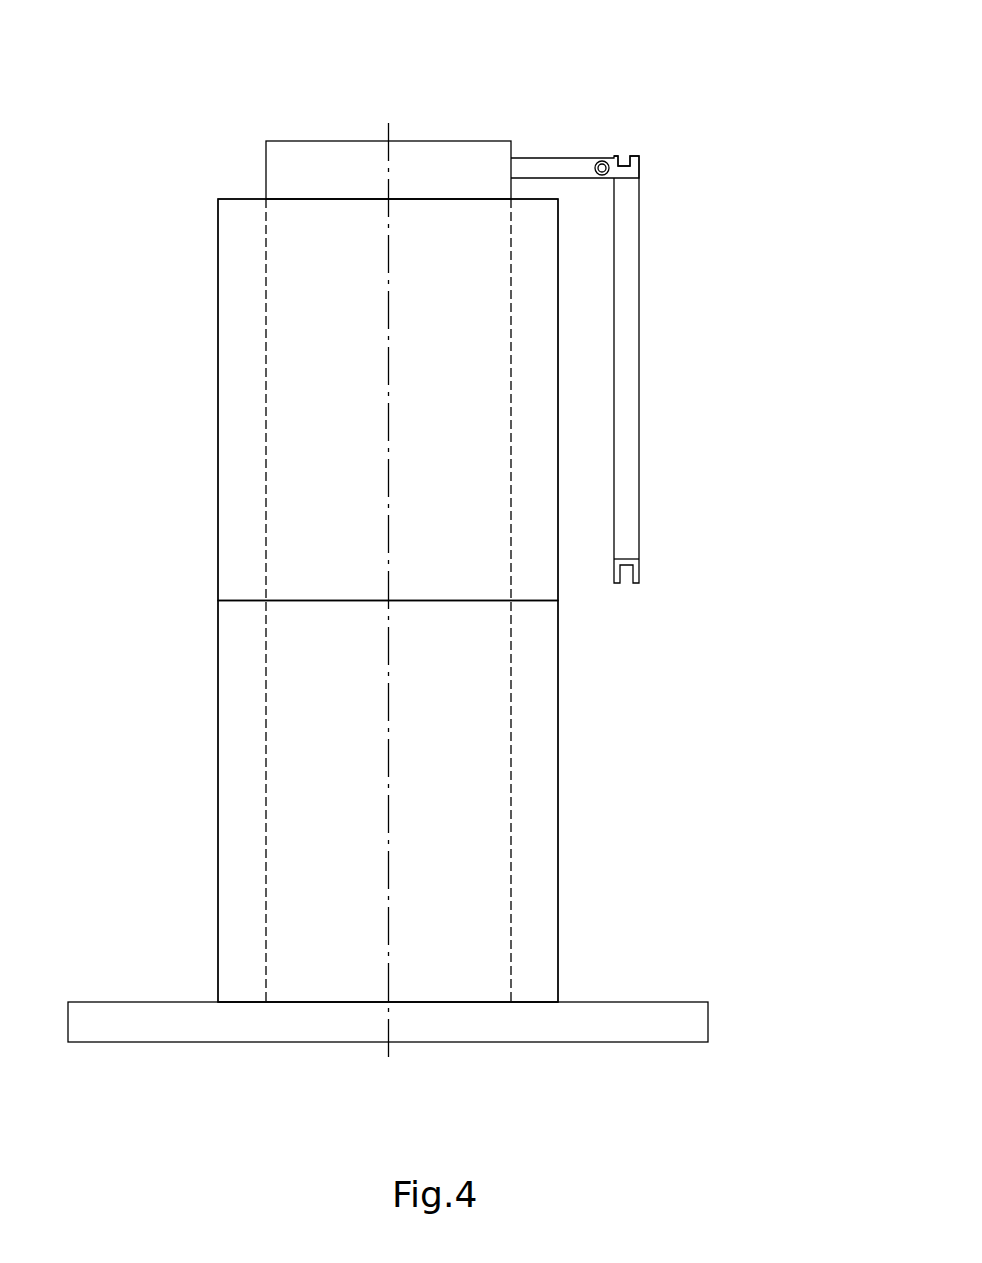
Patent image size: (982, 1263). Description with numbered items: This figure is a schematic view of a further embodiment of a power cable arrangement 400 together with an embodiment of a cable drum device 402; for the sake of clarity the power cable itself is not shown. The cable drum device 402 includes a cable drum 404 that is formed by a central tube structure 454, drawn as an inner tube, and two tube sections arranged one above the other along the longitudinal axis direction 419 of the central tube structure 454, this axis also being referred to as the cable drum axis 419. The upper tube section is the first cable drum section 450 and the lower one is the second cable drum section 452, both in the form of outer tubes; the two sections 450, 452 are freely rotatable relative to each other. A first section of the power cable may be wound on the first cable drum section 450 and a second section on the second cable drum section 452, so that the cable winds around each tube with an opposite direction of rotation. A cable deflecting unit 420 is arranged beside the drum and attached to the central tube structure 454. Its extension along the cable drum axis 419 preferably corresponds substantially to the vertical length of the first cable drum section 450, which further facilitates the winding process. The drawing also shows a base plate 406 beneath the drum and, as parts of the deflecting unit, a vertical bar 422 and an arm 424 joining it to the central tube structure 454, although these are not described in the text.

The power cable arrangement 400 is at (153, 108).
The cable drum device 402 is at (692, 499).
The cable drum 404 is at (310, 278).
The base plate 406 is at (628, 1028).
The longitudinal axis direction 419 is at (388, 437).
The cable deflecting unit 420 is at (663, 164).
The vertical bar 422 is at (633, 274).
The arm 424 is at (573, 168).
The first cable drum section 450 is at (238, 419).
The second cable drum section 452 is at (238, 768).
The central tube structure 454 is at (330, 160).